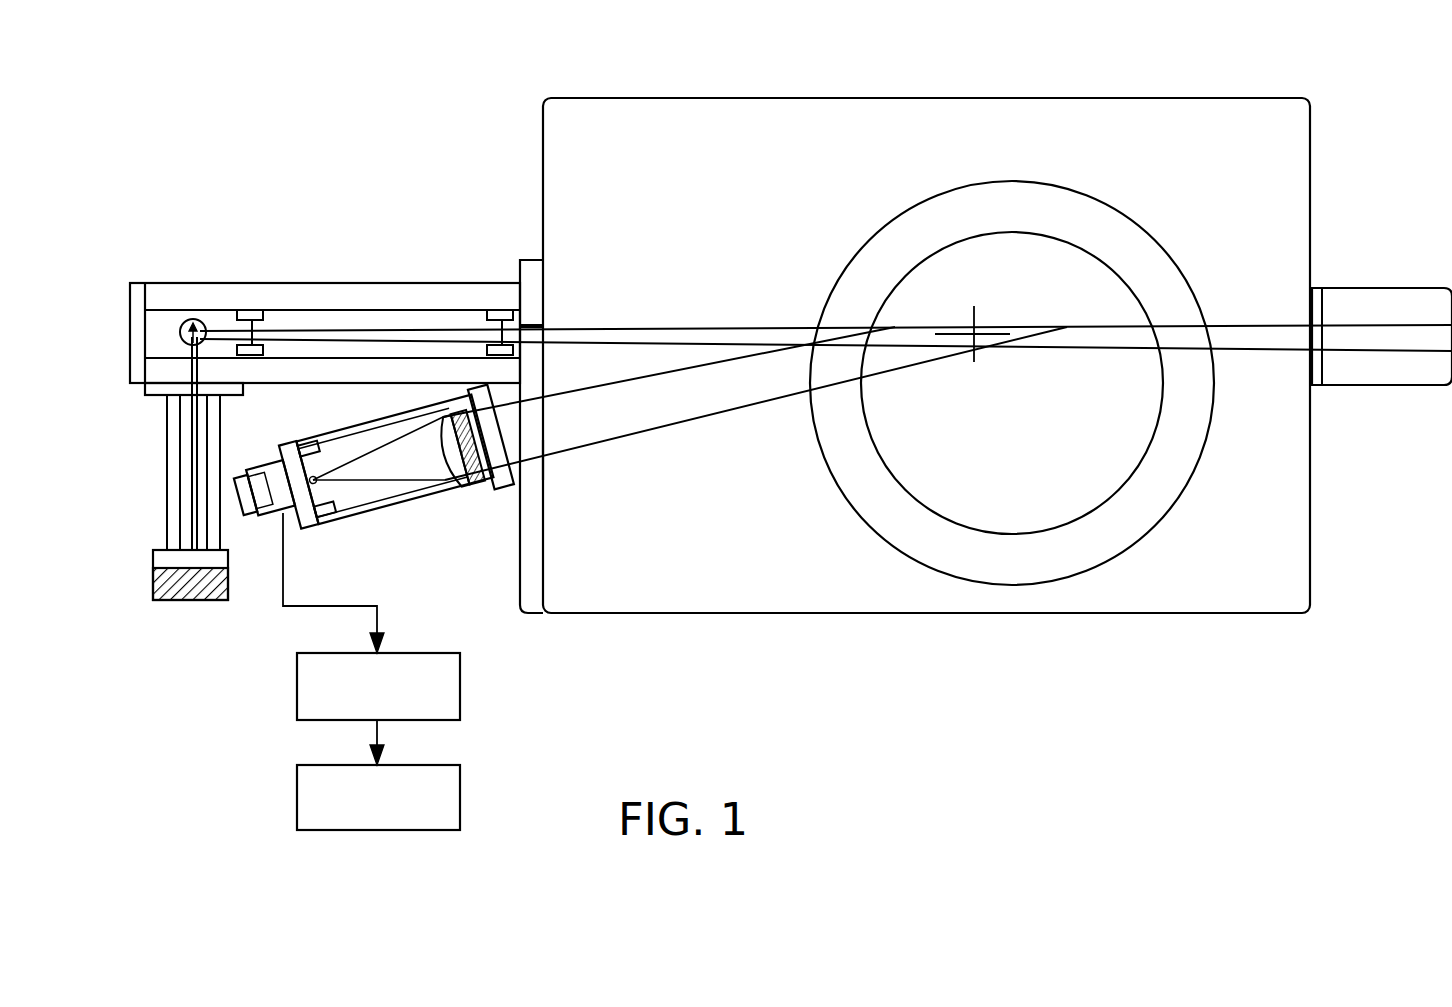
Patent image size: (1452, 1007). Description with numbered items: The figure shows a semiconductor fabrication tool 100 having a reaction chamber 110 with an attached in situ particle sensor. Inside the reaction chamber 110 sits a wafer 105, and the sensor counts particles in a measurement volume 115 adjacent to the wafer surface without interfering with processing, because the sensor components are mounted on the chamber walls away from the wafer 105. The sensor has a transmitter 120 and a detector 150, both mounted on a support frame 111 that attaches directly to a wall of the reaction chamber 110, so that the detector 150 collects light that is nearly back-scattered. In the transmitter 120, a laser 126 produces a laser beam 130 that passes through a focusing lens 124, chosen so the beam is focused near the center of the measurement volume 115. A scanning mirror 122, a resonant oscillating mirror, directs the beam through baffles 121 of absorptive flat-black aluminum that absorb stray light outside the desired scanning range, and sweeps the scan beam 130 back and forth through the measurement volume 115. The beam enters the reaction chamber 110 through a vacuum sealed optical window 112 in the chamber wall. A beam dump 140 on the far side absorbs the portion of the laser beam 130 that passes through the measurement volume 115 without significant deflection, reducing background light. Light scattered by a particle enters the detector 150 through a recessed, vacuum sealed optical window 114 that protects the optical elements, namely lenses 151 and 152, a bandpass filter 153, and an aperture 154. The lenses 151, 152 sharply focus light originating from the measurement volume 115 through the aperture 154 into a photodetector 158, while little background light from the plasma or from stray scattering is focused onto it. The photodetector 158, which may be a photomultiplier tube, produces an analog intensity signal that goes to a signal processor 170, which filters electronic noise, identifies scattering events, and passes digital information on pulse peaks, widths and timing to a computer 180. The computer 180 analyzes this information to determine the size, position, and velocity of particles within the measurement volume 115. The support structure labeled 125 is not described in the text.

The semiconductor fabrication tool 100 is at (416, 122).
The wafer 105 is at (1126, 212).
The reaction chamber 110 is at (700, 97).
The support frame 111 is at (534, 258).
The optical window 112 is at (545, 328).
The optical window 114 is at (545, 465).
The measurement volume 115 is at (1008, 324).
The transmitter 120 is at (195, 283).
The baffles 121 is at (256, 327).
The scanning mirror 122 is at (182, 333).
The focusing lens 124 is at (203, 371).
The support rods 125 is at (187, 468).
The laser 126 is at (153, 577).
The laser beam 130 is at (676, 327).
The beam dump 140 is at (1405, 288).
The detector 150 is at (363, 515).
The lens 151 is at (495, 490).
The lens 152 is at (463, 487).
The bandpass filter 153 is at (463, 407).
The aperture 154 is at (323, 503).
The photodetector 158 is at (250, 480).
The signal processor 170 is at (415, 653).
The computer 180 is at (405, 765).